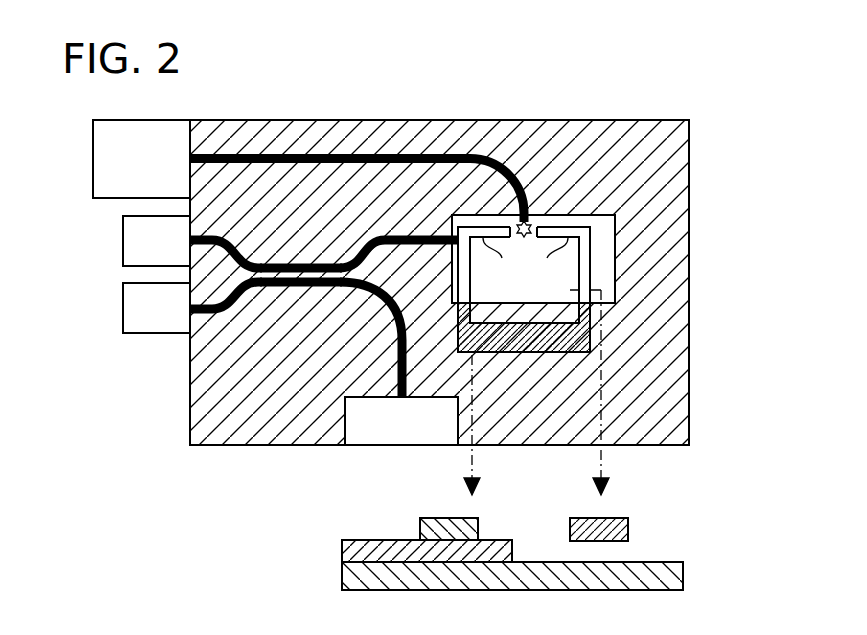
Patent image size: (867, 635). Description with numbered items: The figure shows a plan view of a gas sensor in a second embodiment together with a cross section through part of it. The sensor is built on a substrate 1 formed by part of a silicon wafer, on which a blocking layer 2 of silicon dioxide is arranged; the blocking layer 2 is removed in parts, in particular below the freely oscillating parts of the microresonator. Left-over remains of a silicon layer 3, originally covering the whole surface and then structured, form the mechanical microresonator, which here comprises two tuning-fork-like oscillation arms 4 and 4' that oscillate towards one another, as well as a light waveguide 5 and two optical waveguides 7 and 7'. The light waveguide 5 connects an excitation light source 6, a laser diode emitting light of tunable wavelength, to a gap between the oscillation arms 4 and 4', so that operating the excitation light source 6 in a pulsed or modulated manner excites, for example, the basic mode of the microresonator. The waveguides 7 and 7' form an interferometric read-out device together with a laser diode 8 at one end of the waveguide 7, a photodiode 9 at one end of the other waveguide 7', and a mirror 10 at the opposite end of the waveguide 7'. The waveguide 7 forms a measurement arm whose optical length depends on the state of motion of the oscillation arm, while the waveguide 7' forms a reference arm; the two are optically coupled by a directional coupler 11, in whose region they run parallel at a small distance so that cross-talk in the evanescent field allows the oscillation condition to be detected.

The substrate 1 is at (683, 575).
The blocking layer 2 is at (683, 287).
The silicon layer 3 is at (478, 530).
The oscillation arm 4 is at (494, 358).
The oscillation arm 4' is at (607, 384).
The light waveguide 5 is at (306, 158).
The excitation light source 6 is at (93, 160).
The waveguide 7 is at (324, 223).
The waveguide 7' is at (273, 339).
The laser diode 8 is at (123, 241).
The photodiode 9 is at (123, 304).
The mirror 10 is at (410, 397).
The directional coupler 11 is at (345, 294).